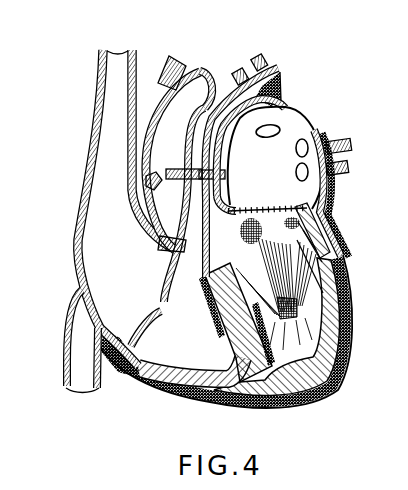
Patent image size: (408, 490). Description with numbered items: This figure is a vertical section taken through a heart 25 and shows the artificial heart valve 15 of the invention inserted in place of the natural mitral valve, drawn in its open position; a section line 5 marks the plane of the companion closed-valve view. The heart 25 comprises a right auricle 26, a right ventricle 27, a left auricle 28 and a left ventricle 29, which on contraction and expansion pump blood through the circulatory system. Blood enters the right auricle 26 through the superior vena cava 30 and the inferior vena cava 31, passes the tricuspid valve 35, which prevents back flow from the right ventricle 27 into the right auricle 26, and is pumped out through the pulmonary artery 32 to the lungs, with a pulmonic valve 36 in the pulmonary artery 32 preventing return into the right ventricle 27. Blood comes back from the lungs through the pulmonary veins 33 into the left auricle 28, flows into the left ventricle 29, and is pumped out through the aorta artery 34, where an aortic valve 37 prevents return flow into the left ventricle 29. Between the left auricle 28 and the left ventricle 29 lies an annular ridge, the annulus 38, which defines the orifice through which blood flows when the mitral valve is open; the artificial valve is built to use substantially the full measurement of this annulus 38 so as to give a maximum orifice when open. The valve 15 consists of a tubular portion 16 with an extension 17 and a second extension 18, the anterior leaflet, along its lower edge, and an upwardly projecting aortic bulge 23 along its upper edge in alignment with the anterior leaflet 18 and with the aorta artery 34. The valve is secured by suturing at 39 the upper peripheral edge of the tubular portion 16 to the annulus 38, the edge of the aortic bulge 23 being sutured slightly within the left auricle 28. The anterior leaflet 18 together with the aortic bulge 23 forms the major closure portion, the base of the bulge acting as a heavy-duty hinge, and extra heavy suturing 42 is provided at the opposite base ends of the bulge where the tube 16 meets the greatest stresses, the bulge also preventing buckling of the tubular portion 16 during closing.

The section line 5- 5 is at (72, 170).
The heart valve 15 is at (264, 202).
The tubular portion 16 is at (320, 219).
The extension 17 is at (327, 233).
The second extension 18 is at (207, 274).
The aortic bulge 23 is at (240, 200).
The heart 25 is at (66, 228).
The right auricle 26 is at (123, 318).
The right ventricle 27 is at (182, 358).
The left auricle 28 is at (310, 120).
The left ventricle 29 is at (314, 312).
The superior vena cava 30 is at (115, 128).
The inferior vena cava 31 is at (82, 362).
The pulmonary artery 32 is at (284, 106).
The pulmonary veins 33 is at (262, 63).
The aorta artery 34 is at (173, 107).
The tricuspid valve 35 is at (155, 303).
The pulmonic valve 36 is at (216, 120).
The aortic valve 37 is at (128, 193).
The annulus 38 is at (314, 198).
The suturing 39 is at (296, 208).
The extra heavy suturing 42 is at (256, 205).